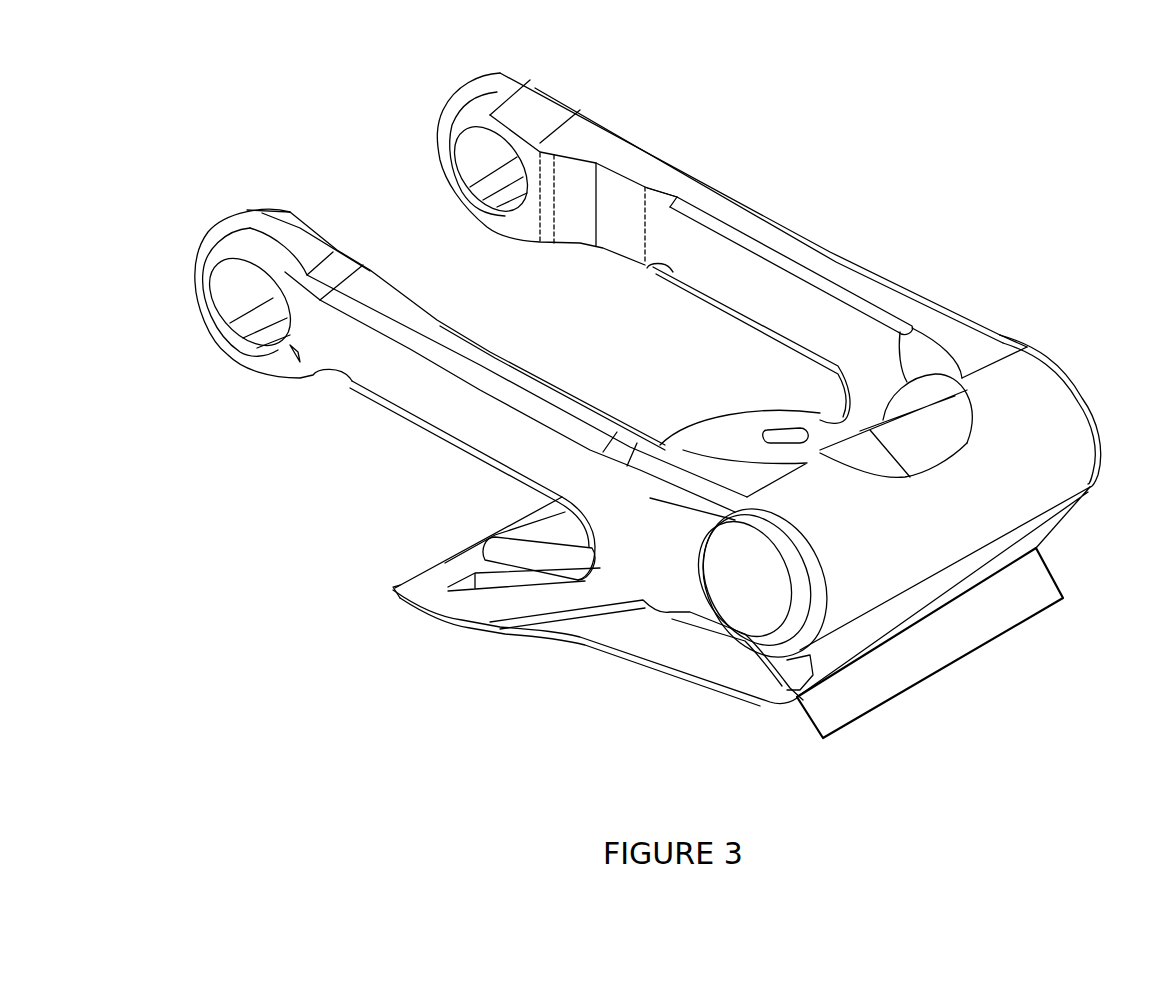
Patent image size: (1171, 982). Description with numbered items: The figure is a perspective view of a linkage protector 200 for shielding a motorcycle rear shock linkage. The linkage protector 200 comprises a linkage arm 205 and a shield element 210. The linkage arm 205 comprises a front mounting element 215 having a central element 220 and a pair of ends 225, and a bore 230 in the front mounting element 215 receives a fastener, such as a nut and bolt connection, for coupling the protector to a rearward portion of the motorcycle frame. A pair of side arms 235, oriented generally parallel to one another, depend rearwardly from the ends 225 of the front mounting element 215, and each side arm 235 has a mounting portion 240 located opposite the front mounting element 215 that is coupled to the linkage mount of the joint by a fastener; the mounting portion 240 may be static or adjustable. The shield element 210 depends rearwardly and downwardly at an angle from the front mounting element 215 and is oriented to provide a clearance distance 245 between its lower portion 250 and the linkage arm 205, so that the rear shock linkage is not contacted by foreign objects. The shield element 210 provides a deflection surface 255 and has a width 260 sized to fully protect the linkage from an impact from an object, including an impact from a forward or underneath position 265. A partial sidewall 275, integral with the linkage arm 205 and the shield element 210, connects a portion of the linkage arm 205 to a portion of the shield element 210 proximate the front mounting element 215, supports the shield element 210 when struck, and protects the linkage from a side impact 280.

The linkage protector 200 is at (864, 165).
The linkage arm 205 is at (985, 290).
The shield element 210 is at (668, 686).
The front mounting element 215 is at (952, 541).
The central element 220 is at (962, 508).
The ends 225 is at (1027, 362).
The bore 230 is at (775, 617).
The side arms 235 is at (720, 207).
The mounting portion 240 is at (265, 220).
The clearance distance 245 is at (457, 532).
The lower portion 250 is at (490, 458).
The deflection surface 255 is at (710, 690).
The width 260 is at (937, 673).
The impact from a forward or underneath position 265 is at (878, 758).
The sidewall 275 is at (857, 423).
The side impact 280 is at (494, 649).